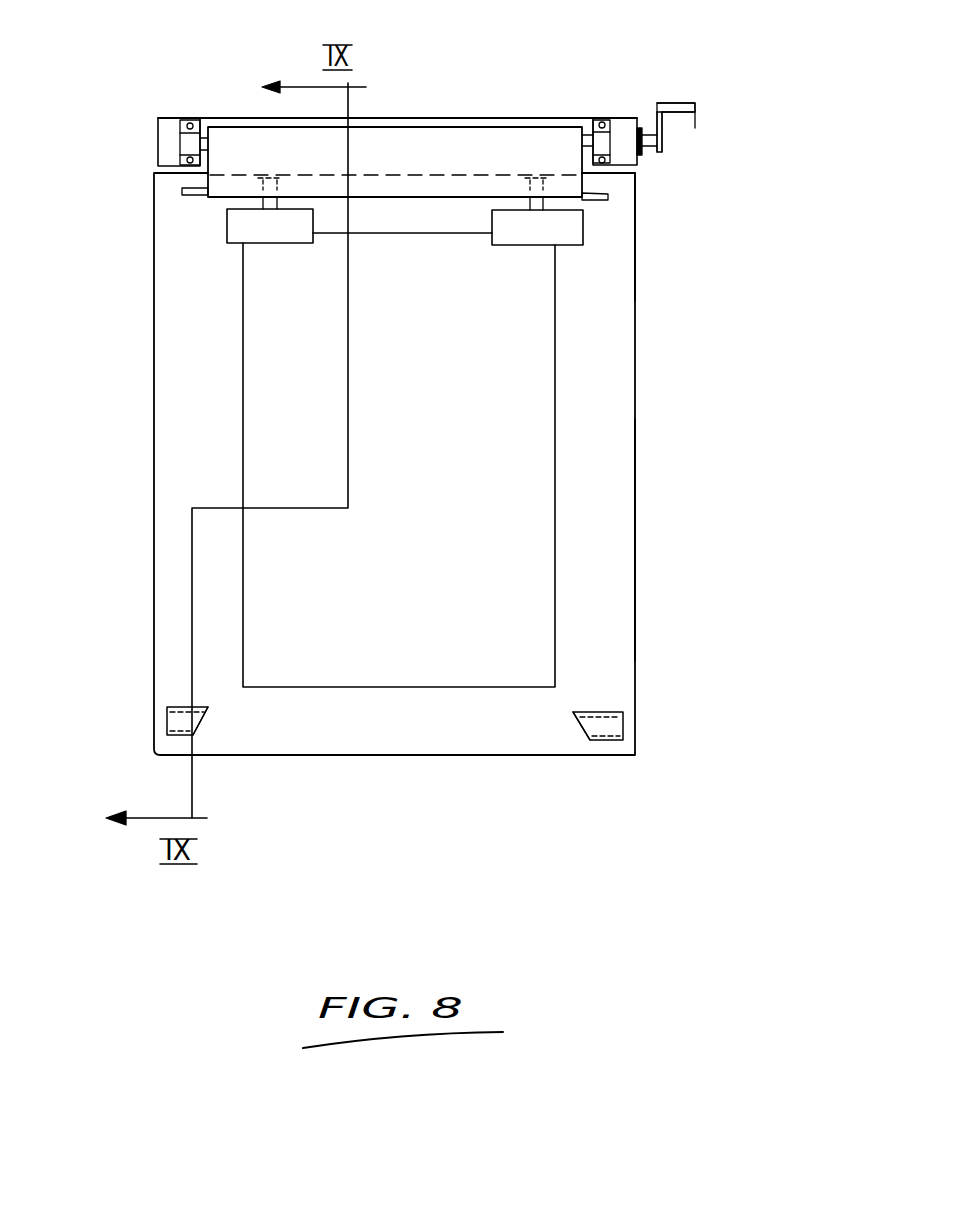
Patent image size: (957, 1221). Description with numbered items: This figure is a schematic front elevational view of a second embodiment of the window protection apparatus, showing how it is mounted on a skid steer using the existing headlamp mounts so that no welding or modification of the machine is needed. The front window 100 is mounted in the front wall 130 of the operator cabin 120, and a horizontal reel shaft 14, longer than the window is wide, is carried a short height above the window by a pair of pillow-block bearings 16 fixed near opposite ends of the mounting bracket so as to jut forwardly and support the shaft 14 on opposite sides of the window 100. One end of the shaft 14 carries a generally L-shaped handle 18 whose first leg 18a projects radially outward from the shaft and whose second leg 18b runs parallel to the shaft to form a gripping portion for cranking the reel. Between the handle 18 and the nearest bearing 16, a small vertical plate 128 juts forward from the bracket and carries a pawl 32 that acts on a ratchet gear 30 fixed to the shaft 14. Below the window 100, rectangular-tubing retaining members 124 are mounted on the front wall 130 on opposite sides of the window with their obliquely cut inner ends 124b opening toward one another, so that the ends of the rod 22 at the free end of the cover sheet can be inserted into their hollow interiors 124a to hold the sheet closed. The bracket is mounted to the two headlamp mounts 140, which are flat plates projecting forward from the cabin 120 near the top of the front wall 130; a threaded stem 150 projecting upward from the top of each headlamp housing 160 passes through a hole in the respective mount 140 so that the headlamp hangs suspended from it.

The horizontal shaft 14 is at (590, 132).
The pillow-block bearings 16 is at (183, 144).
The L-shaped handle 18 is at (690, 102).
The first leg of the handle 18a is at (666, 142).
The second leg of the handle 18b is at (661, 128).
The rod 22 is at (195, 194).
The ratchet gear 30 is at (643, 154).
The pawl 32 is at (643, 138).
The front window 100 is at (467, 665).
The operator cabin 120 is at (633, 407).
The tubular retaining members 124 is at (181, 736).
The hollow interior 124a is at (158, 725).
The inner end 124b is at (208, 725).
The vertical plate 128 is at (638, 166).
The front wall 130 is at (623, 545).
The headlamp mounts 140 is at (262, 186).
The threaded stem 150 is at (281, 203).
The headlamp housing 160 is at (253, 237).